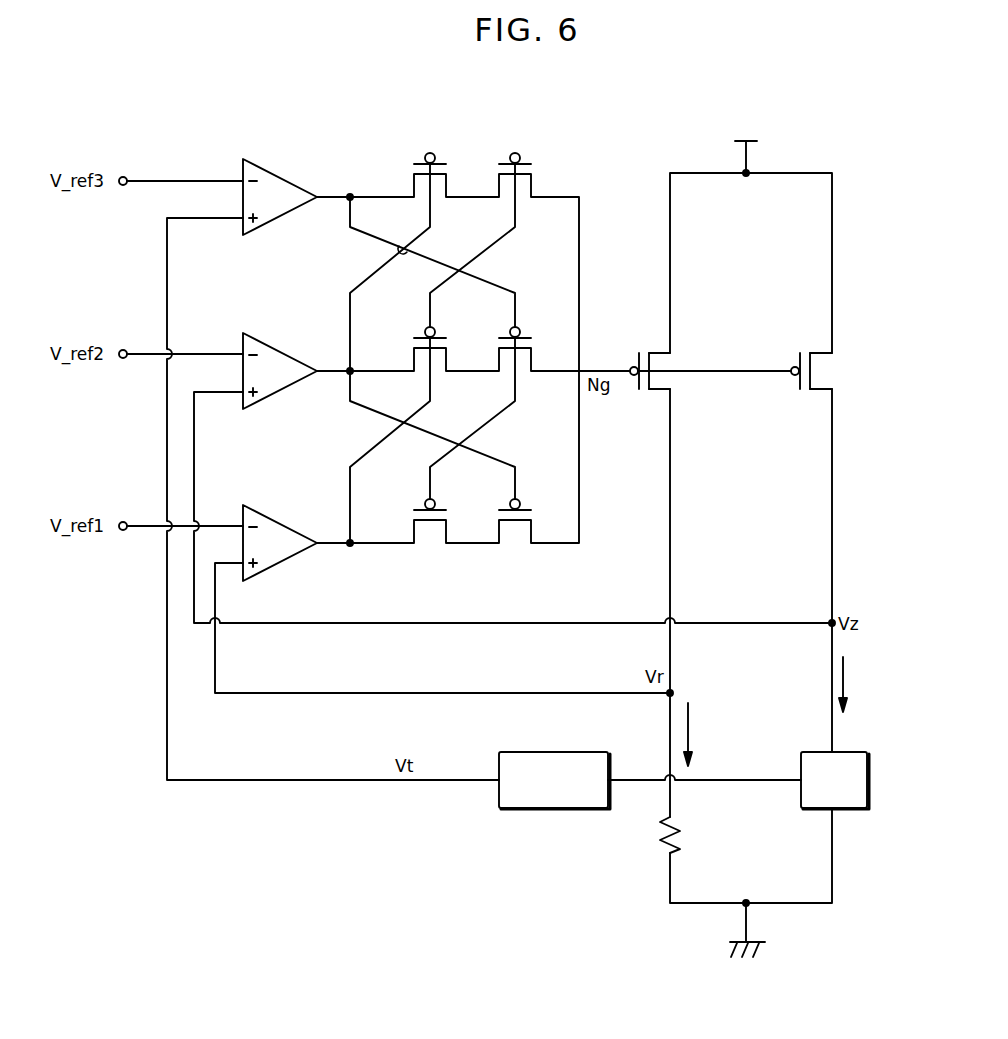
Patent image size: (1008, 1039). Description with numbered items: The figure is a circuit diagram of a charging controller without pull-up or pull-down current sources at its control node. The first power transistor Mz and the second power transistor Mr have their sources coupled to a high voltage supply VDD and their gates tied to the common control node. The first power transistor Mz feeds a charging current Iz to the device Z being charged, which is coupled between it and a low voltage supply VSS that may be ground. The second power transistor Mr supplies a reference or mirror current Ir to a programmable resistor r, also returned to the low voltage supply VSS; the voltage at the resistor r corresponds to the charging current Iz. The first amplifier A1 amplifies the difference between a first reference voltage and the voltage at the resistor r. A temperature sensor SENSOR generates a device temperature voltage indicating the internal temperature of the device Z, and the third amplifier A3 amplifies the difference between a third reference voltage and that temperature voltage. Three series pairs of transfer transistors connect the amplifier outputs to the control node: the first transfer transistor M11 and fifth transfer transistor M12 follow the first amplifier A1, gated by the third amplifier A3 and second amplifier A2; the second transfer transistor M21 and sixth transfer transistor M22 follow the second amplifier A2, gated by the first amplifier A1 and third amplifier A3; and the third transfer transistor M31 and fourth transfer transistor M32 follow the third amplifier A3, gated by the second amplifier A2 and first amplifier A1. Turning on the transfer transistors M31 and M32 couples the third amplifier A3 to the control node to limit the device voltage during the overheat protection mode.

The first amplifier A1 is at (280, 543).
The second amplifier A2 is at (280, 371).
The third amplifier A3 is at (280, 197).
The first transfer transistor M11 is at (445, 498).
The fifth transfer transistor M12 is at (530, 498).
The second transfer transistor M21 is at (413, 428).
The sixth transfer transistor M22 is at (496, 406).
The third transfer transistor M31 is at (413, 255).
The fourth transfer transistor M32 is at (496, 233).
The second power transistor Mr is at (663, 365).
The first power transistor Mz is at (825, 371).
The device to be charged Z is at (835, 780).
The programmable resistor r is at (661, 835).
The temperature sensor SENSOR is at (554, 780).
The mirror current Ir is at (695, 734).
The charging current Iz is at (852, 684).
The high voltage supply VDD is at (746, 146).
The low voltage supply VSS is at (747, 943).